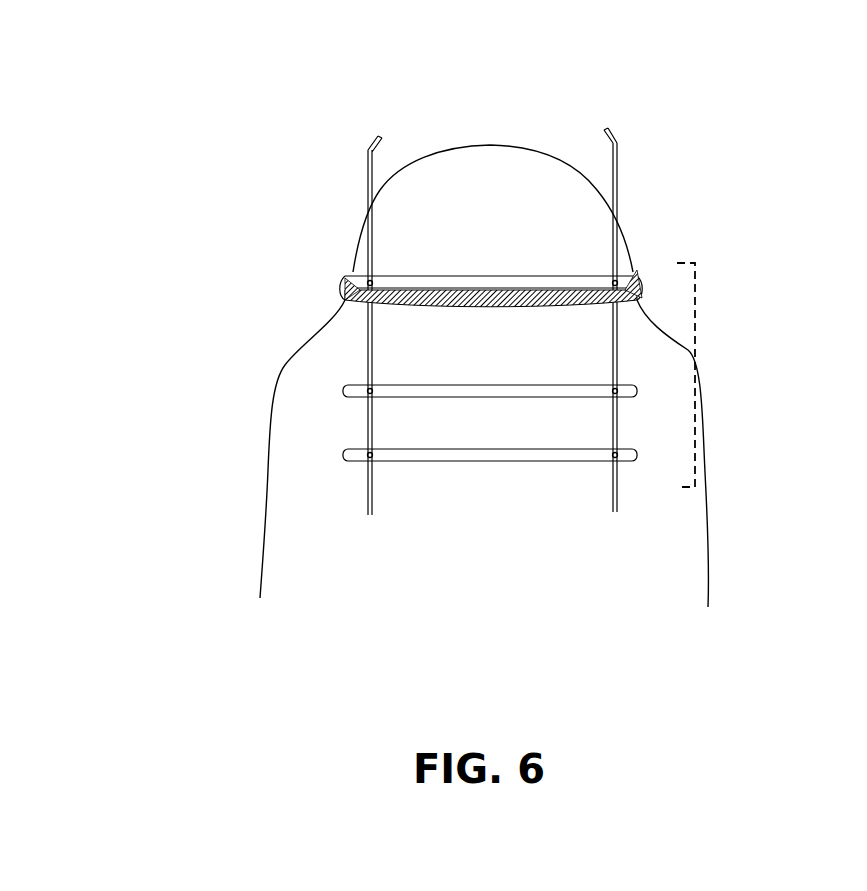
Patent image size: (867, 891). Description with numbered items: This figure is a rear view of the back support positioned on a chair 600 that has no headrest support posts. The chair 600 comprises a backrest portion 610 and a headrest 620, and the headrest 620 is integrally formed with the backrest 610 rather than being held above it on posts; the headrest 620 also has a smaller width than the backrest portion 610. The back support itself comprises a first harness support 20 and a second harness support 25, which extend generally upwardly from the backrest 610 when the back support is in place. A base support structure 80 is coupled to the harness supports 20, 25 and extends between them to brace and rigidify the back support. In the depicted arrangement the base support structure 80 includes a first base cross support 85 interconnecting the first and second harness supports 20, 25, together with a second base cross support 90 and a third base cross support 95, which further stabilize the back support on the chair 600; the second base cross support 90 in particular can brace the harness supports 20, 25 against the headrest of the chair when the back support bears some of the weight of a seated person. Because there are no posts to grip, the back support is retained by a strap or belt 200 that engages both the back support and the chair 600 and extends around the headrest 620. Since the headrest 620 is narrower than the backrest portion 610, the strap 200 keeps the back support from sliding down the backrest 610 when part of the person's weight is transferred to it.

The chair 600 is at (400, 312).
The backrest portion 610 is at (278, 566).
The headrest 620 is at (487, 167).
The first harness support 20 is at (370, 190).
The second harness support 25 is at (617, 180).
The second base cross support 90 is at (372, 294).
The strap 200 is at (477, 304).
The first base cross support 85 is at (353, 393).
The third base cross support 95 is at (353, 457).
The base support structure 80 is at (697, 376).